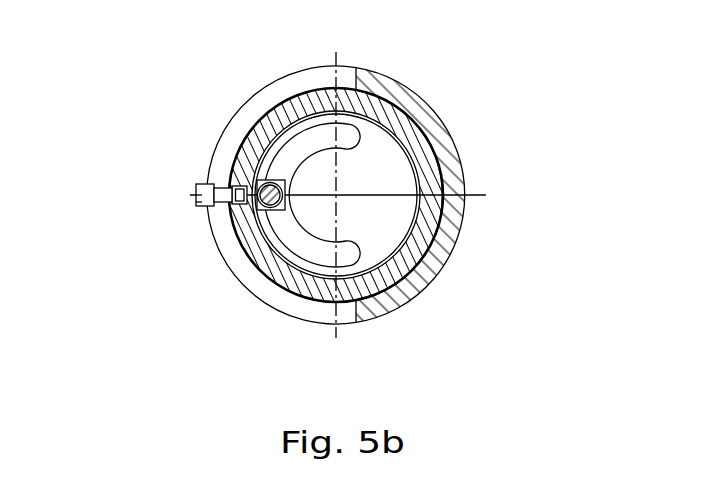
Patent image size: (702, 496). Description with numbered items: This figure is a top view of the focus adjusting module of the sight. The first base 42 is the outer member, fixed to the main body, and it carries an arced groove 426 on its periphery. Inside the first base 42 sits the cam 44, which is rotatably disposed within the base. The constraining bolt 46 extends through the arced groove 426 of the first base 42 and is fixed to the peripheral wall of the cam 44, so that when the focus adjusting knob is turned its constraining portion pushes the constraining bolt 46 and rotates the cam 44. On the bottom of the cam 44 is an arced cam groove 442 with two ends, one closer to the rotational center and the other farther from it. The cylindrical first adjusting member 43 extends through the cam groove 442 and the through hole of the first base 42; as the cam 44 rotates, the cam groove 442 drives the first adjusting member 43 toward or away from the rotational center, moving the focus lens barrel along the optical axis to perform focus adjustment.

The first base 42 is at (425, 282).
The arced groove 426 is at (258, 282).
The first adjusting member 43 is at (262, 133).
The cam 44 is at (432, 177).
The cam groove 442 is at (307, 140).
The constraining bolt 46 is at (197, 201).